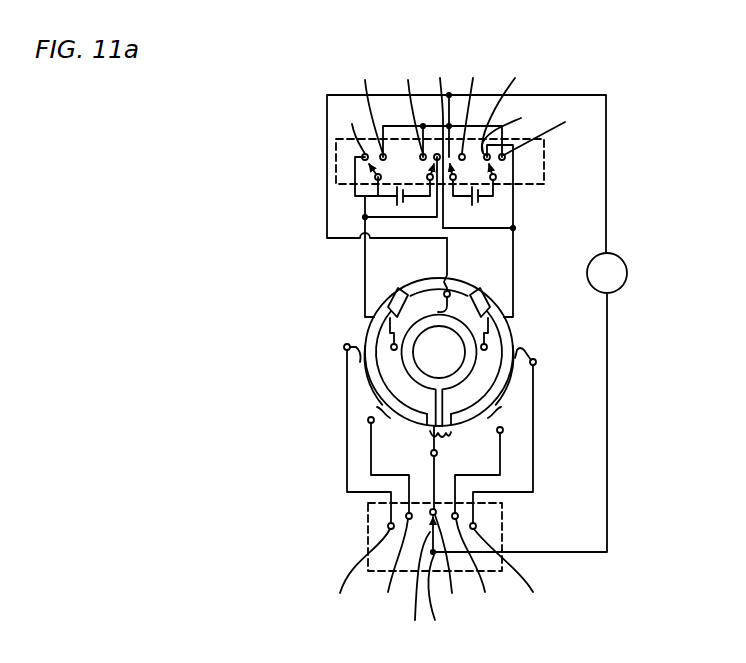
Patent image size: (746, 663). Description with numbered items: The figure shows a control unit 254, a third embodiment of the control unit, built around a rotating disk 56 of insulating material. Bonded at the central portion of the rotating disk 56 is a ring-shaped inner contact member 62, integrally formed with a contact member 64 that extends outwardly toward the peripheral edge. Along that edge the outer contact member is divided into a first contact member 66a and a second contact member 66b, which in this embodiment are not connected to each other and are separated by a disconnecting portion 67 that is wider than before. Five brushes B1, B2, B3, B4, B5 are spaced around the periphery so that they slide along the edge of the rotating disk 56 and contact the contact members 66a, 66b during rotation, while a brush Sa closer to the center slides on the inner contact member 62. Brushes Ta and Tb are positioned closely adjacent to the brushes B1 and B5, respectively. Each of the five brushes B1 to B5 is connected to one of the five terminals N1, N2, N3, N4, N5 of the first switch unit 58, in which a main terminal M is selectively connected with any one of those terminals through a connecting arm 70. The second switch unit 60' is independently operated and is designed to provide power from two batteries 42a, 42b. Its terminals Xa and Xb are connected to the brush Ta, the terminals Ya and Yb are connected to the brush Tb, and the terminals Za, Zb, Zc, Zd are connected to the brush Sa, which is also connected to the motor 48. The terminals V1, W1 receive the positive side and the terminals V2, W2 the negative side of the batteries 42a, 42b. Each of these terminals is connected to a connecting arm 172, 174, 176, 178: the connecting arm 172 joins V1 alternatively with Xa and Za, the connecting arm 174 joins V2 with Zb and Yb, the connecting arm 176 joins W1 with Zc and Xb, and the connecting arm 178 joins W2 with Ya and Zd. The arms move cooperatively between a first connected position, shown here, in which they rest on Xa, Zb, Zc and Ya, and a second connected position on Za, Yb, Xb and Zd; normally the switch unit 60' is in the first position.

The control unit 254 is at (589, 74).
The motor 48 is at (628, 272).
The switch unit 60' is at (394, 153).
The connecting arm 172 is at (372, 168).
The connecting arm 178 is at (508, 150).
The terminal V1 is at (375, 178).
The terminal V2 is at (409, 163).
The terminal W1 is at (464, 180).
The terminal W2 is at (497, 177).
The battery 42a is at (378, 198).
The battery 42b is at (472, 203).
The terminal Xa is at (350, 130).
The terminal Za is at (365, 108).
The terminal Zb is at (407, 108).
The terminal Yb is at (442, 142).
The terminal Zc is at (478, 108).
The terminal Xb is at (513, 108).
The terminal Ya is at (516, 130).
The terminal Zd is at (552, 128).
The connecting arm 174 is at (433, 183).
The connecting arm 176 is at (440, 183).
The inner contact member 62 is at (377, 310).
The first contact member 66a is at (372, 381).
The second contact member 66b is at (500, 395).
The rotating disk 56 is at (390, 298).
The disconnecting portion 67 is at (458, 292).
The contact member 64 is at (442, 403).
The brush Sa is at (450, 308).
The brush Ta is at (391, 346).
The brush Tb is at (487, 346).
The brush B1 is at (345, 349).
The brush B2 is at (369, 420).
The brush B3 is at (432, 442).
The brush B4 is at (503, 432).
The brush B5 is at (536, 365).
The first switch unit 58 is at (368, 532).
The terminal N1 is at (356, 571).
The terminal N2 is at (389, 566).
The terminal N3 is at (450, 564).
The terminal N4 is at (482, 566).
The terminal N5 is at (512, 571).
The connecting arm 70 is at (413, 586).
The main terminal M is at (443, 603).